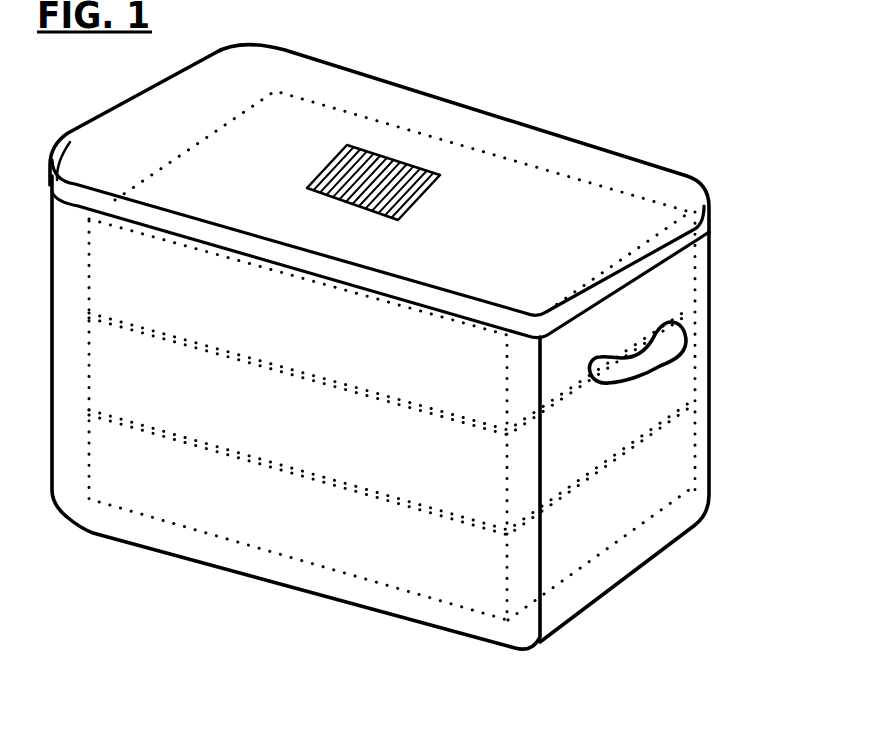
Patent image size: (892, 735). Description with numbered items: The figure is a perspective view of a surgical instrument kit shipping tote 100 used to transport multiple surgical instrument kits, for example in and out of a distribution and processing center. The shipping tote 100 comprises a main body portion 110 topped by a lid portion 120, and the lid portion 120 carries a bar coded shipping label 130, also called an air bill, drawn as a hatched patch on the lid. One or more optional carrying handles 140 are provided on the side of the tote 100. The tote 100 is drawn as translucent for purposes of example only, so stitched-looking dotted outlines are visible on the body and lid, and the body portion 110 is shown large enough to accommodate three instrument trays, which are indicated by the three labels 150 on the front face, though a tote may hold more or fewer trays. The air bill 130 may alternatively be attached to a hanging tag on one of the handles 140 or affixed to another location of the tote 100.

The surgical instrument kit shipping tote 100 is at (418, 344).
The main body portion 110 is at (633, 571).
The lid portion 120 is at (537, 240).
The bar coded shipping label 130 is at (312, 176).
The carrying handle 140 is at (658, 365).
The drawers / storage compartments 150 is at (326, 346).